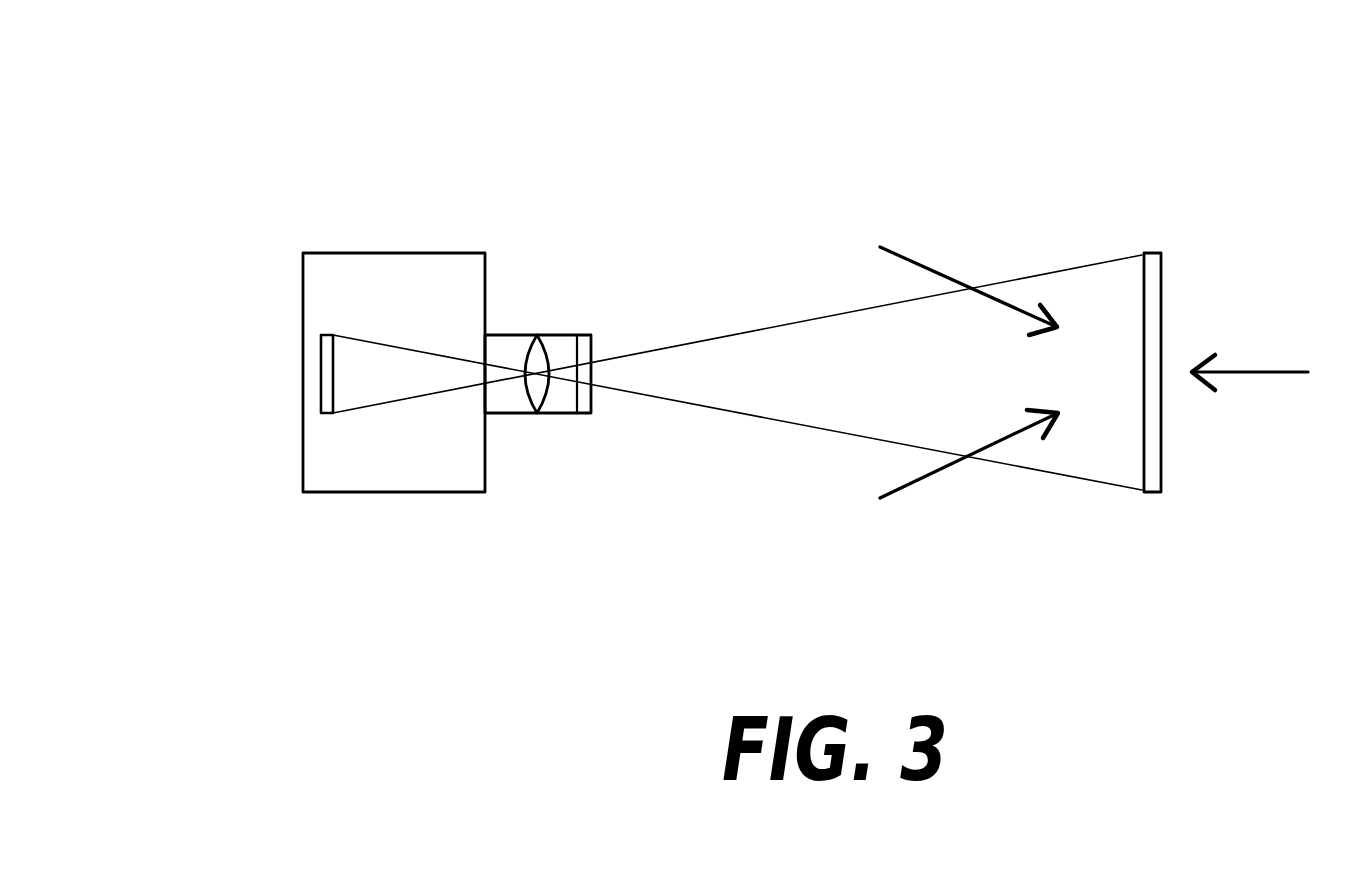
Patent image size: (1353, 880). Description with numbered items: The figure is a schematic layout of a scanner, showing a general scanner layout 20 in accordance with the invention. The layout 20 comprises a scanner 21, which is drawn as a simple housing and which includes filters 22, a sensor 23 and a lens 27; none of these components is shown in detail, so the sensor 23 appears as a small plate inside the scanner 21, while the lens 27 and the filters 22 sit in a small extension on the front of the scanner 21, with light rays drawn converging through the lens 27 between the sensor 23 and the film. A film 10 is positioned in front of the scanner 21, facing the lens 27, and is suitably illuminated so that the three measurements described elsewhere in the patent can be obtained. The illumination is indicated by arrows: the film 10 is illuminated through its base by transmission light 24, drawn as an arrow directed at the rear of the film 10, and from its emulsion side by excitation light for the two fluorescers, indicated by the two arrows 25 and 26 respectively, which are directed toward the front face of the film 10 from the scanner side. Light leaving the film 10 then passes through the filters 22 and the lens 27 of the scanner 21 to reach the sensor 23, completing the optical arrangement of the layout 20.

The scanner layout 20 is at (1062, 132).
The scanner 21 is at (394, 238).
The sensor 23 is at (323, 418).
The filters 22 is at (578, 414).
The lens 27 is at (536, 348).
The excitation light 25 is at (905, 257).
The excitation light 26 is at (915, 485).
The film 10 is at (1161, 254).
The transmission light 24 is at (1252, 373).